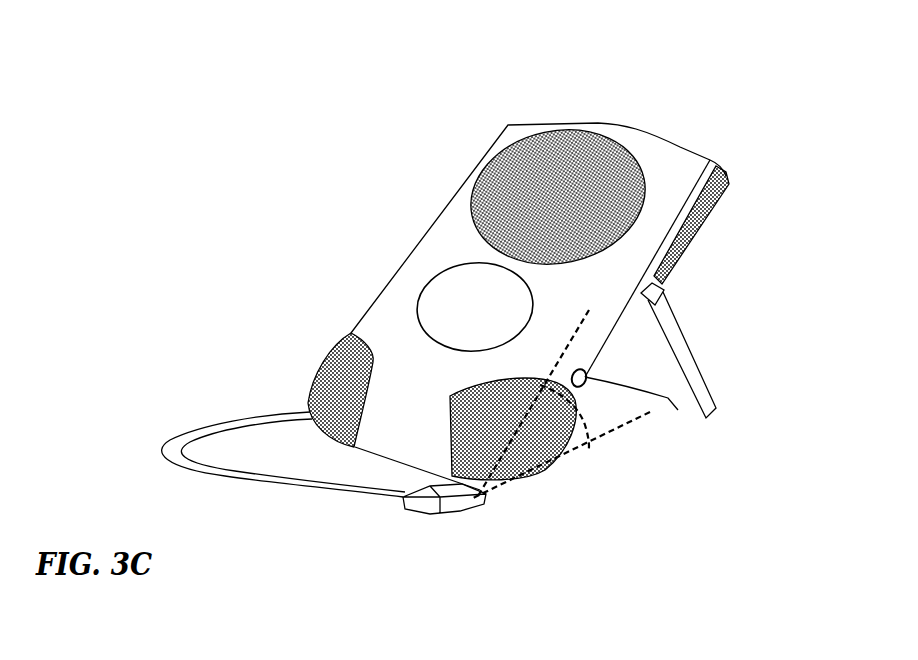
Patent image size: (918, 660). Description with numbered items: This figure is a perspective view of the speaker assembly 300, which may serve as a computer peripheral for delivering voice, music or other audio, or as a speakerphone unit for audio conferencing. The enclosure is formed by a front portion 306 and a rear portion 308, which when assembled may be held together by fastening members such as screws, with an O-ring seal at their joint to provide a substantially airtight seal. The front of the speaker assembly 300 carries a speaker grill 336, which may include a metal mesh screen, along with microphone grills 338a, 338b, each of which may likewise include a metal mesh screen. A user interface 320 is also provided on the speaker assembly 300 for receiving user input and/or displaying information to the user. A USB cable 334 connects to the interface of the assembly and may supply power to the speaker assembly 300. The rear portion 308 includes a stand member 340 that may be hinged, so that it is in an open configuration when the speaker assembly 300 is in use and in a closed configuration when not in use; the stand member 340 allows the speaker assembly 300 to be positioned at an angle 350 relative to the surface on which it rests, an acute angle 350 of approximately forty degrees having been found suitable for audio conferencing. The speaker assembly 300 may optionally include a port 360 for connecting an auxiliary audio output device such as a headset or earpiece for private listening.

The speaker assembly 300 is at (708, 101).
The front portion 306 is at (508, 125).
The rear portion 308 is at (682, 263).
The user interface 320 is at (422, 331).
The USB cable 334 is at (213, 425).
The speaker grill 336 is at (503, 180).
The microphone grill 338a is at (340, 402).
The microphone grill 338b is at (583, 522).
The stand member 340 is at (680, 340).
The angle 350 is at (587, 427).
The port 360 is at (582, 385).